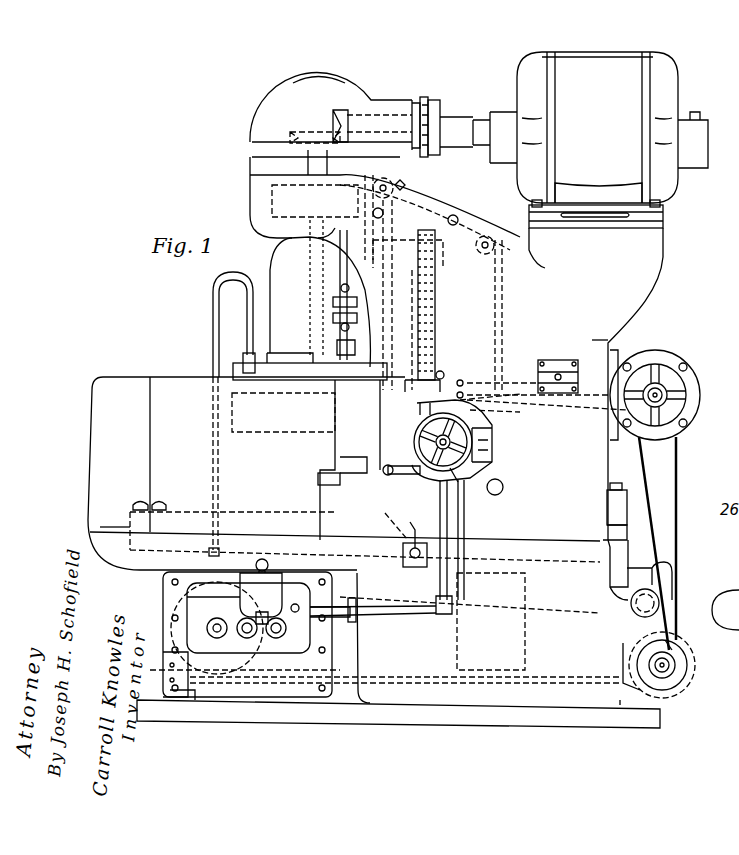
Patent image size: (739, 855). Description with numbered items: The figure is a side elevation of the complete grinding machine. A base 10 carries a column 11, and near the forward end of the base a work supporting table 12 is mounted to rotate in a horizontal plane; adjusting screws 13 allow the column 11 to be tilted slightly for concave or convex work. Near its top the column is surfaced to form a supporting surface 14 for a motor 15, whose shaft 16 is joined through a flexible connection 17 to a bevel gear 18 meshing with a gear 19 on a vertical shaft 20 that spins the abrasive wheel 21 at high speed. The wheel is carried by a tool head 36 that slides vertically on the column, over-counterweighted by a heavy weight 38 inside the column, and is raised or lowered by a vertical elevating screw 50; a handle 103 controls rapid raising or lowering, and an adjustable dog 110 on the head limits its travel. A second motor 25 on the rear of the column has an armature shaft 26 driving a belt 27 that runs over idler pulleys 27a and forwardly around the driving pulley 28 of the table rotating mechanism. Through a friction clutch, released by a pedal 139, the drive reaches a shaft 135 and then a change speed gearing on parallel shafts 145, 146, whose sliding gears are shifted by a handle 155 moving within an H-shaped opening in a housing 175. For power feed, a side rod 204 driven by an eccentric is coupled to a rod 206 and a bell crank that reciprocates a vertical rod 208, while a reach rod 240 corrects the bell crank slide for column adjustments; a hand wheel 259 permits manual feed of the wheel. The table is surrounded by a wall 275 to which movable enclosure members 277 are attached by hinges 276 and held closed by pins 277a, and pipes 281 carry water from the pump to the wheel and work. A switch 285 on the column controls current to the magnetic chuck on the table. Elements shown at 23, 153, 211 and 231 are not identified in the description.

The base 10 is at (535, 722).
The column 11 is at (605, 318).
The work supporting table 12 is at (185, 512).
The adjusting screws 13 is at (627, 527).
The supporting surface 14 is at (655, 222).
The motor 15 is at (603, 63).
The shaft 16 is at (480, 117).
The flexible connection 17 is at (430, 100).
The gear 18 is at (333, 120).
The gear 19 is at (300, 138).
The vertical shaft 20 is at (250, 170).
The abrasive wheel 21 is at (287, 430).
The shaft 23 is at (724, 457).
The motor 25 is at (676, 363).
The armature shaft 26 is at (668, 391).
The belt 27 is at (678, 472).
The idler pulleys 27a is at (655, 600).
The driving pulley 28 is at (582, 408).
The tool carriage or head 36 is at (280, 262).
The weight 38 is at (513, 641).
The vertical elevating screw 50 is at (433, 320).
The handle 103 is at (415, 478).
The adjustable dog 110 is at (342, 289).
The shaft 135 is at (210, 620).
The pedal 139 is at (180, 697).
The shaft 145 is at (255, 640).
The shaft 146 is at (280, 642).
The loop 153 is at (725, 584).
The handle 155 is at (262, 559).
The housing 175 is at (672, 650).
The shaft or rod 204 is at (352, 622).
The rod or shaft 206 is at (430, 614).
The vertical rod 208 is at (462, 528).
The cam 211 is at (180, 598).
The handwheel 231 is at (495, 448).
The reach rod 240 is at (445, 523).
The hand wheel 259 is at (450, 470).
The wall 275 is at (367, 388).
The hinge 276 is at (322, 484).
The movable enclosure members 277 is at (167, 375).
The pins 277a is at (145, 505).
The pipes 281 is at (212, 305).
The switch 285 is at (558, 372).